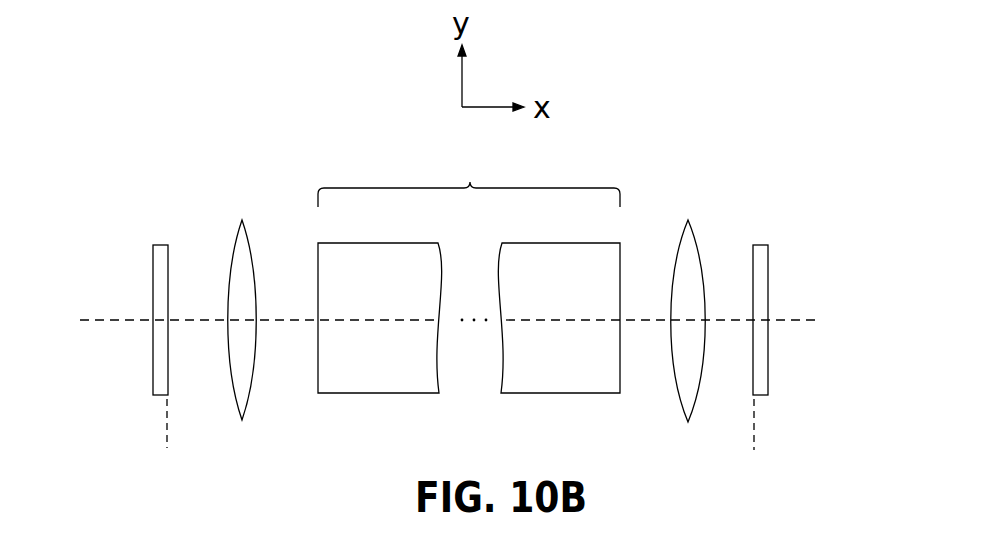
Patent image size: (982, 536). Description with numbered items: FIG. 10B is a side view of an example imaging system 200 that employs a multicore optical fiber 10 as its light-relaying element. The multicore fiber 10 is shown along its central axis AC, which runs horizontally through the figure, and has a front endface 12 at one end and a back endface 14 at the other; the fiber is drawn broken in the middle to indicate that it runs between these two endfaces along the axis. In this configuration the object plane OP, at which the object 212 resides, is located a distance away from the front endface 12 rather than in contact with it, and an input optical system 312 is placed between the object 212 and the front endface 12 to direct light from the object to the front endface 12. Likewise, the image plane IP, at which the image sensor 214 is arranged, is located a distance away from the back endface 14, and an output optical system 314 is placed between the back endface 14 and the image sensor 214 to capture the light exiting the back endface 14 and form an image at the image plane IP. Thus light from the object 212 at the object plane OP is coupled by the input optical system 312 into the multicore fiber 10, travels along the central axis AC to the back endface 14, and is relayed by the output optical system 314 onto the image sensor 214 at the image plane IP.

The imaging system 200 is at (652, 104).
The multicore optical fiber 10 is at (470, 183).
The front endface 12 is at (318, 392).
The back endface 14 is at (620, 392).
The object 212 is at (153, 283).
The image sensor 214 is at (768, 337).
The input optical system 312 is at (242, 220).
The output optical system 314 is at (688, 220).
The central axis AC is at (789, 319).
The object plane OP is at (166, 412).
The image plane IP is at (760, 420).